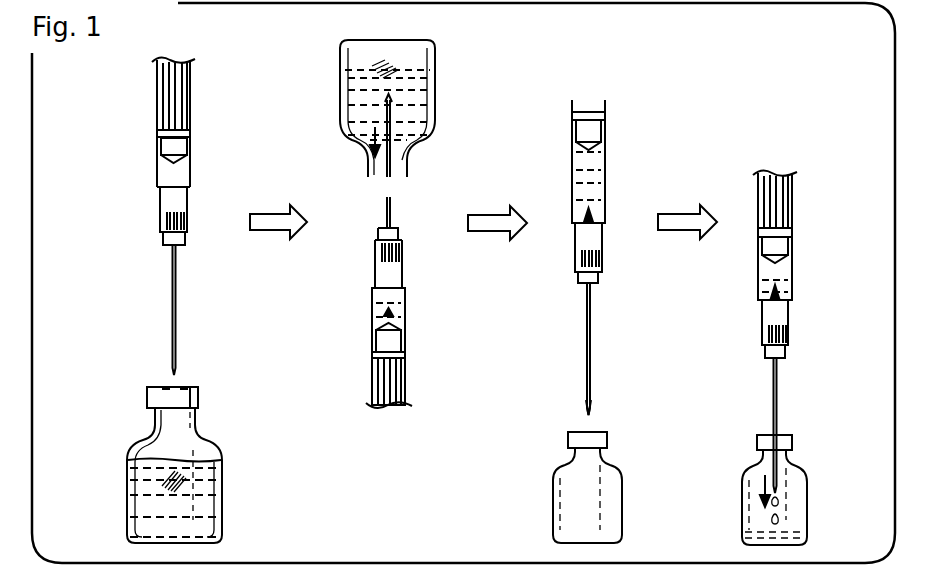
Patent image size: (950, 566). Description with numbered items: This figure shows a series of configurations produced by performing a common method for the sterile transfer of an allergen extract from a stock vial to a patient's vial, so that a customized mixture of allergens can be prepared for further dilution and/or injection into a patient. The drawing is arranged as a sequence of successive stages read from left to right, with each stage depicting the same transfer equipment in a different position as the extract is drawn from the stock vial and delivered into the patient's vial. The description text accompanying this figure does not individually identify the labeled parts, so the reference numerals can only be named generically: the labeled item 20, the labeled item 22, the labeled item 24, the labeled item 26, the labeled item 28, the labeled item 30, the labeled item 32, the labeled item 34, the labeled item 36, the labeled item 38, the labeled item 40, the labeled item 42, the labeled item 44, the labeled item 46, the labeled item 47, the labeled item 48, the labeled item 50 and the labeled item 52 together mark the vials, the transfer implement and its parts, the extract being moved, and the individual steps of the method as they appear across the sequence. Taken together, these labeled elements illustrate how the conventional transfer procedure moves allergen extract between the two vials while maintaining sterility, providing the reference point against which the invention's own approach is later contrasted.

The syringe assembly 20 is at (92, 104).
The medicament 22 is at (140, 506).
The medicament vial 24 is at (110, 435).
The vial cap 26 is at (152, 388).
The cap opening 28 is at (165, 378).
The vial stopper 30 is at (190, 402).
The cap rim 32 is at (185, 378).
The second vial 34 is at (545, 462).
The piston 36 is at (148, 138).
The syringe barrel 38 is at (190, 168).
The needle 40 is at (177, 290).
The needle hub 42 is at (107, 218).
The filling step 44 is at (307, 170).
The plunger rod 46 is at (395, 380).
The fluid flow direction 47 is at (400, 320).
The transfer step 48 is at (557, 187).
The needle tip 50 is at (580, 430).
The dispensing step 52 is at (730, 288).